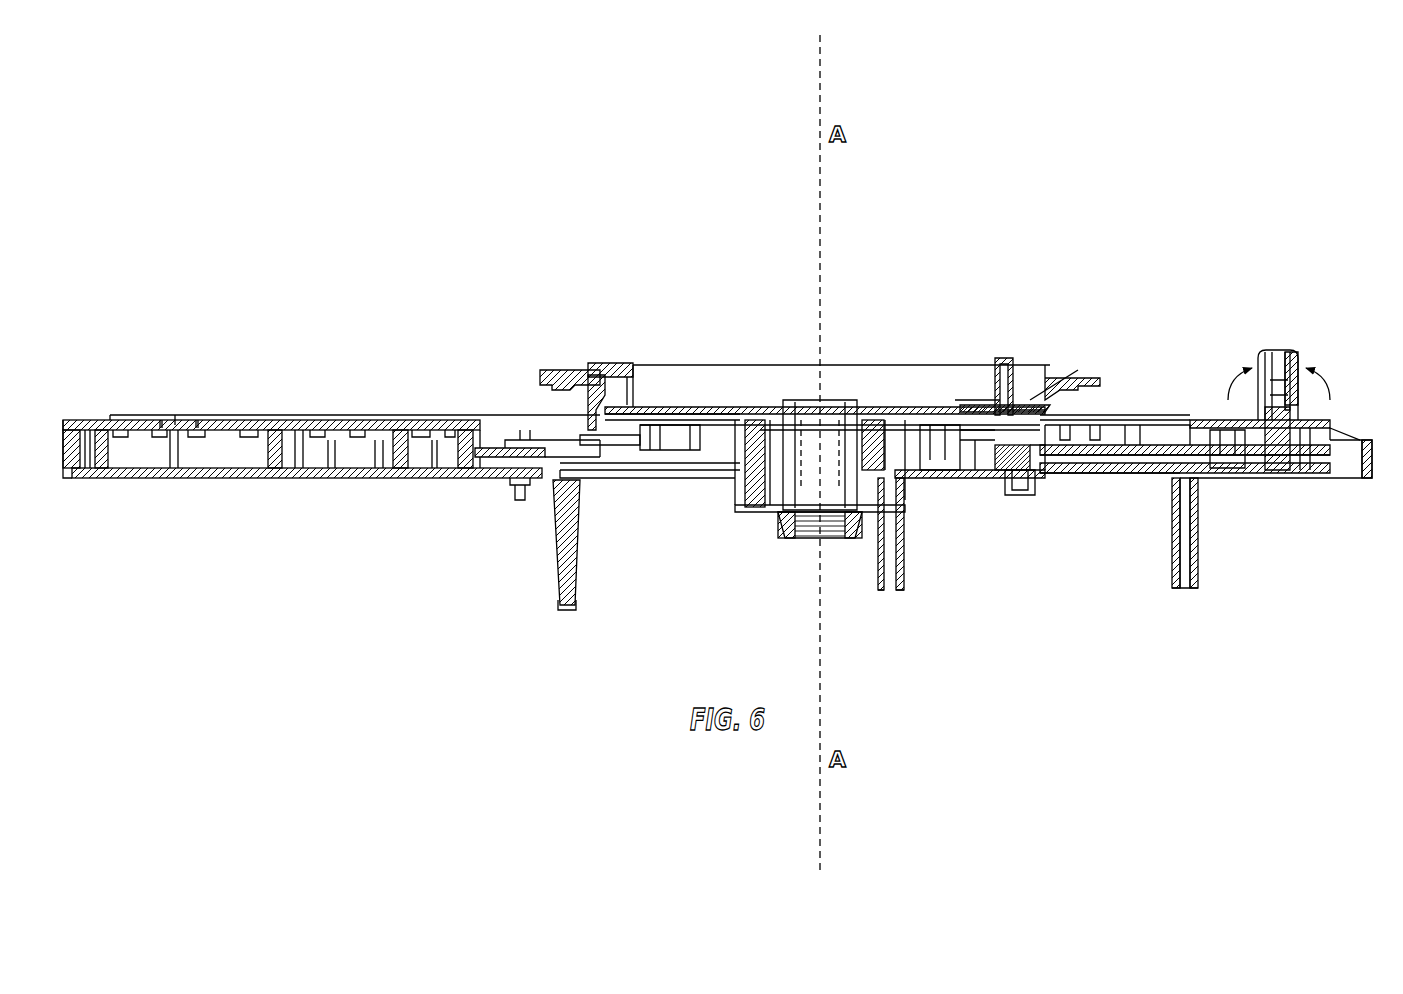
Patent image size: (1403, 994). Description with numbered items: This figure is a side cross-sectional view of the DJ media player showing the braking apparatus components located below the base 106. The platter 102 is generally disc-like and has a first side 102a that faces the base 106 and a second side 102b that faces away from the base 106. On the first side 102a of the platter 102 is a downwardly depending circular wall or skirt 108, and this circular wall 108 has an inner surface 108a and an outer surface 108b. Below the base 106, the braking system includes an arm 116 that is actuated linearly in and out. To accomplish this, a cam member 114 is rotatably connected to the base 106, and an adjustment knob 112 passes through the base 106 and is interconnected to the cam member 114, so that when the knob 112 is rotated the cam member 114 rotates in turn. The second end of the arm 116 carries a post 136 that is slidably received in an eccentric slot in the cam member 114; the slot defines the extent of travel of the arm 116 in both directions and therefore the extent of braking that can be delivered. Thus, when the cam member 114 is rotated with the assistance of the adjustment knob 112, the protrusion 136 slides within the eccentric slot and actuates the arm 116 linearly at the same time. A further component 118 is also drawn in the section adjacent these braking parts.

The platter 102 is at (1085, 368).
The first side 102a is at (1015, 420).
The second side 102b is at (978, 410).
The base 106 is at (378, 462).
The circular wall 108 is at (588, 413).
The inner surface 108a is at (1010, 428).
The outer surface 108b is at (1020, 420).
The adjustment knob 112 is at (1300, 362).
The cam member 114 is at (1245, 468).
The arm 116 is at (1168, 478).
The spring 118 is at (1040, 478).
The post 136 is at (1222, 470).